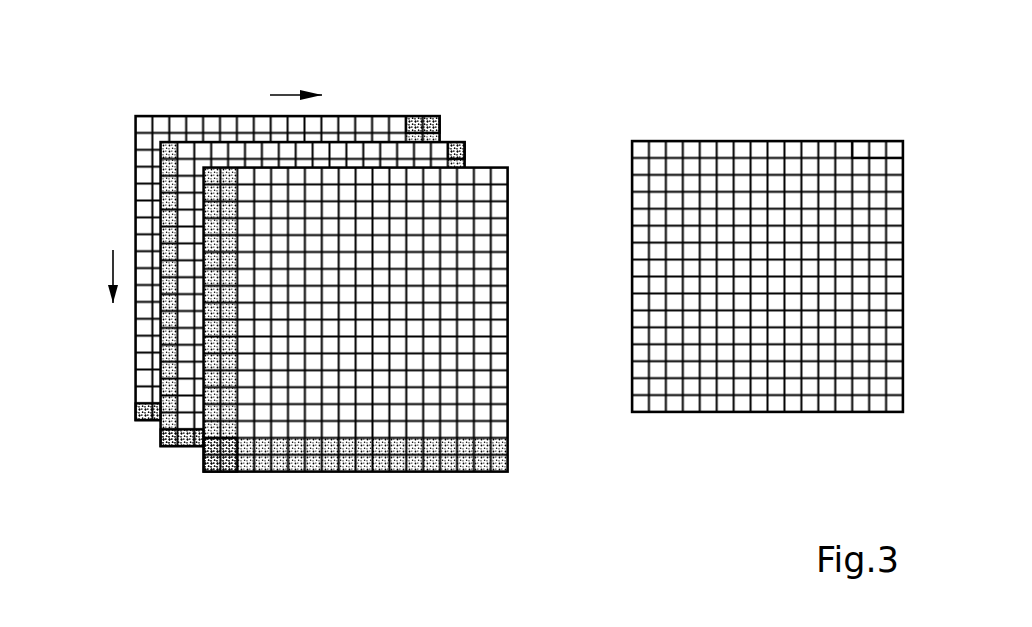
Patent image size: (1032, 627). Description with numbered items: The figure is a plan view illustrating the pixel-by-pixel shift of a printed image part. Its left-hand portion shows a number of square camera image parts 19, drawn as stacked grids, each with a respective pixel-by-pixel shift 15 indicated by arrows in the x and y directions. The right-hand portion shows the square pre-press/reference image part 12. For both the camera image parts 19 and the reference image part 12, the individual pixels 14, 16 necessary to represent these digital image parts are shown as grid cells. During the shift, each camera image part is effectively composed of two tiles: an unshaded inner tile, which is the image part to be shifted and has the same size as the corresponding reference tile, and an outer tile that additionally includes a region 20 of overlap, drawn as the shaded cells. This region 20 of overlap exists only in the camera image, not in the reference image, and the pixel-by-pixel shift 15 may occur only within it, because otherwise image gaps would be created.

The pre-press/reference image part 12 is at (689, 138).
The individual pixels 14 is at (893, 148).
The pixel-by-pixel shift 15 is at (113, 270).
The individual pixels 16 is at (502, 378).
The square camera image parts 19 is at (442, 114).
The region of overlap 20 is at (137, 423).